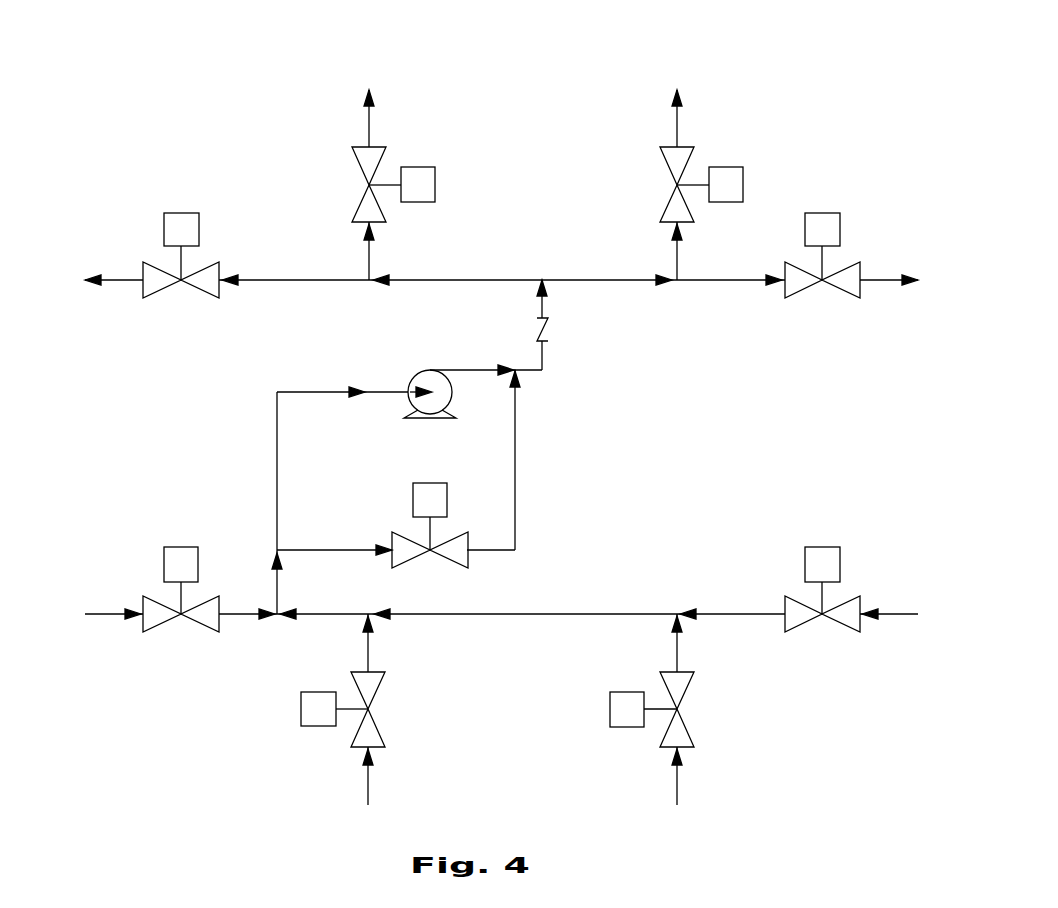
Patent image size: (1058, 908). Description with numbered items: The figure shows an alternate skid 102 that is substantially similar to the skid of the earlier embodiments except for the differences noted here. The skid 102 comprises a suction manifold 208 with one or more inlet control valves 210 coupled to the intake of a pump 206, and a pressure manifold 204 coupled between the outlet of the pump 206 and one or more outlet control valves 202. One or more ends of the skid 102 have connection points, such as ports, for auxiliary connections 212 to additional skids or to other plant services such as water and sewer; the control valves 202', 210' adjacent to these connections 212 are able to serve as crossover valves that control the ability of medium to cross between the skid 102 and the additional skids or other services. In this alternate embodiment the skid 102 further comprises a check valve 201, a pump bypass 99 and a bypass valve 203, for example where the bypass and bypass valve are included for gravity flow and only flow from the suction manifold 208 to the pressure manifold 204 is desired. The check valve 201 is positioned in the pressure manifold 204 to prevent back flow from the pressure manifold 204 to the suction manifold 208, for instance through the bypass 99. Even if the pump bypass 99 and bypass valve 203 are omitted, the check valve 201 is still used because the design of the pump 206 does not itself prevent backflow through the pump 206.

The skid 102 is at (858, 43).
The pump bypass 99 is at (320, 550).
The check valve 201 is at (567, 325).
The outlet control valves 202 is at (572, 185).
The control valves 202' is at (501, 243).
The bypass valve 203 is at (430, 512).
The pressure manifold 204 is at (502, 274).
The pump 206 is at (430, 409).
The suction manifold 208 is at (502, 626).
The inlet control valves 210 is at (474, 709).
The control valves 210' is at (501, 576).
The auxiliary connections 212 is at (502, 446).